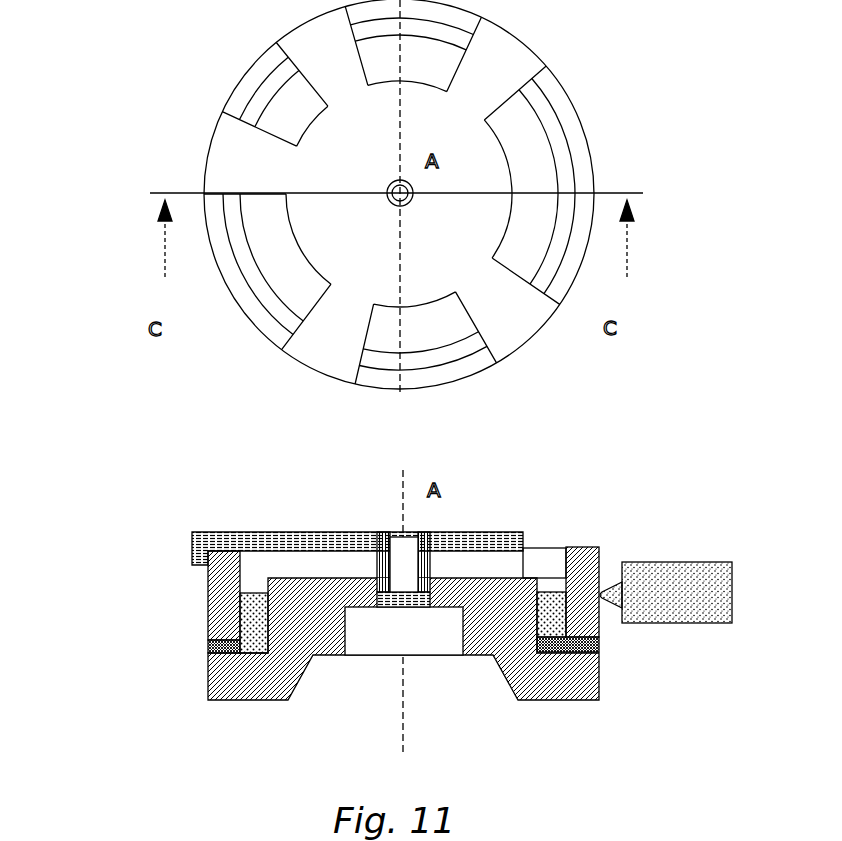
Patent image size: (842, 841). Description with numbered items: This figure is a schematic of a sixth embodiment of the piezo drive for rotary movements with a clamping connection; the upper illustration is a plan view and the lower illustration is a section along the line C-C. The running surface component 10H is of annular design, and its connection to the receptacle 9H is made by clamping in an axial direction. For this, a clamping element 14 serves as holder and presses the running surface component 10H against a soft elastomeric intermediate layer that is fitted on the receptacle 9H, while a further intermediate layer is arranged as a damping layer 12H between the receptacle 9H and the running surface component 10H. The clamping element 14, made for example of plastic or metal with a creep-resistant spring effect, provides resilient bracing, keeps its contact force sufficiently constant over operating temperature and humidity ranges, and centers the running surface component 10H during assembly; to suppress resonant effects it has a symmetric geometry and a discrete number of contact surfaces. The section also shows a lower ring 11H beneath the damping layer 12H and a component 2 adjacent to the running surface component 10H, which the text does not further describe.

The clamping element 14 is at (223, 150).
The running surface component 10H is at (552, 95).
The receptacle 9H is at (522, 118).
The damping layer 12H is at (390, 362).
The bottom ring 11H is at (210, 644).
The actuator component 2 is at (650, 573).